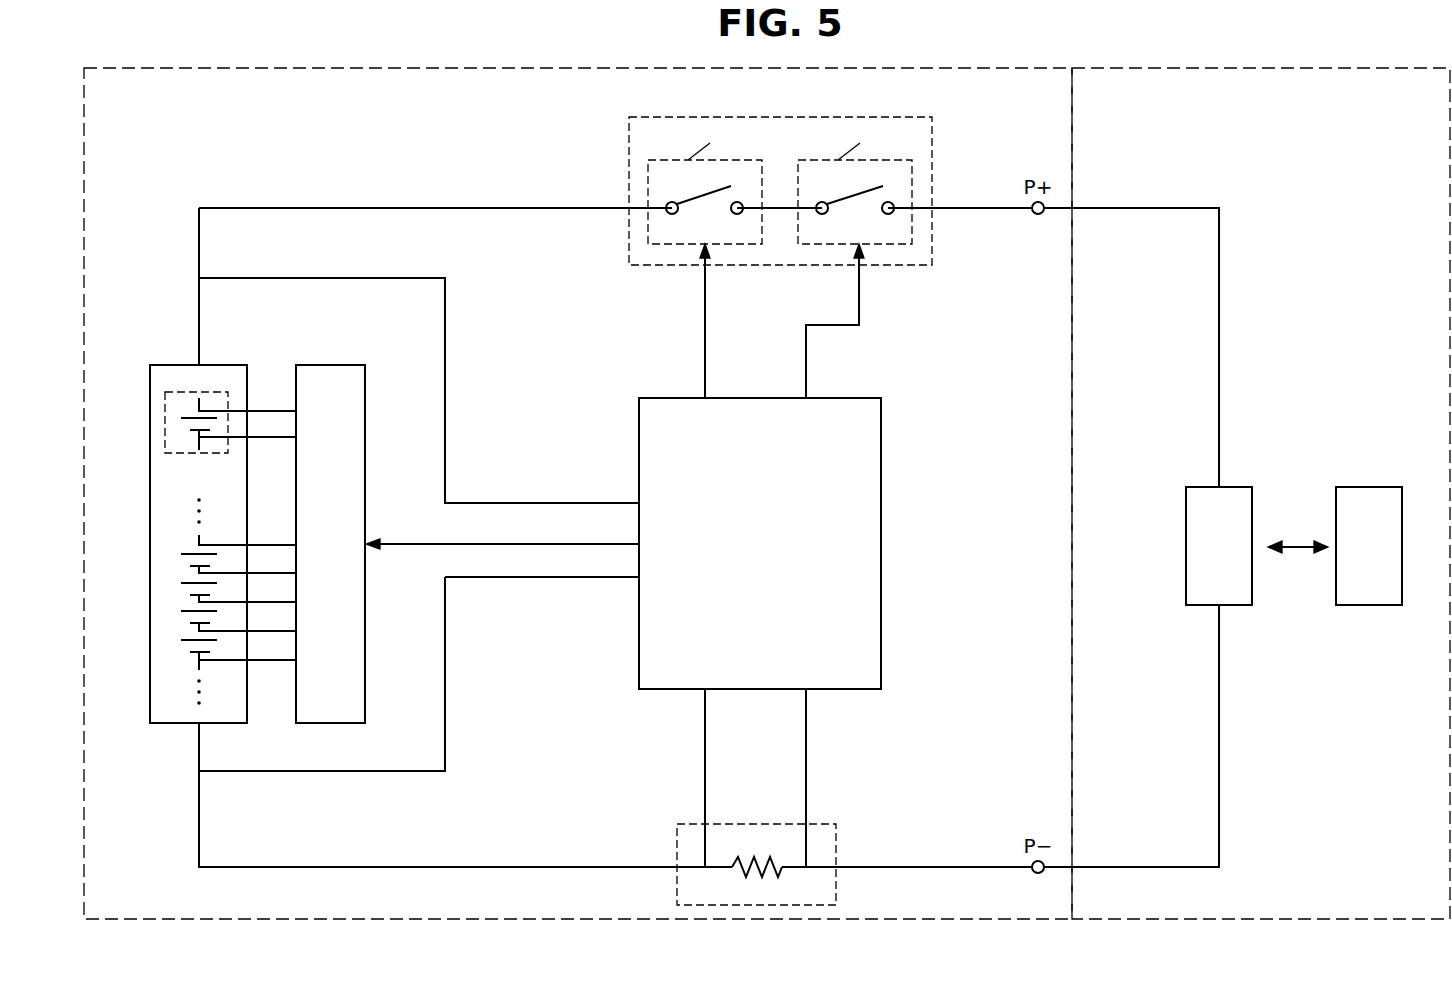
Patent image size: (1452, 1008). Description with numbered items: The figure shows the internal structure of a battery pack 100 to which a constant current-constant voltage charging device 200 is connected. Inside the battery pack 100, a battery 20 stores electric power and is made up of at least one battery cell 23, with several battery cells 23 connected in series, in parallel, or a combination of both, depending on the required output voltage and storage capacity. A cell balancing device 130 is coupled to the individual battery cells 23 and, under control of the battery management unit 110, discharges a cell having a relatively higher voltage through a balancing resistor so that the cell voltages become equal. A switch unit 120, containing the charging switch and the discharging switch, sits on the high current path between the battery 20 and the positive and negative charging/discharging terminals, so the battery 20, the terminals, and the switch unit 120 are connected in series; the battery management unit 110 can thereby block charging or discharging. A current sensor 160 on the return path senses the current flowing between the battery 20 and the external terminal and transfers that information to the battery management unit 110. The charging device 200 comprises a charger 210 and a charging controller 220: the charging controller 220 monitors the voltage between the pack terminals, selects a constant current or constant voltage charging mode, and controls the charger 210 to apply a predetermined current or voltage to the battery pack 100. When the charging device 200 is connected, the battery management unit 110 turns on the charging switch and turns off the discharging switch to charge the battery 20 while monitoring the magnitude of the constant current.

The battery pack 100 is at (958, 66).
The charging device 200 is at (1310, 66).
The switch unit 120 is at (855, 117).
The battery management unit 110 is at (881, 545).
The cell balancing device 130 is at (325, 362).
The battery 20 is at (188, 364).
The battery cell 23 is at (165, 423).
The current sensor 160 is at (822, 824).
The charger 210 is at (1235, 487).
The charging controller 220 is at (1365, 487).